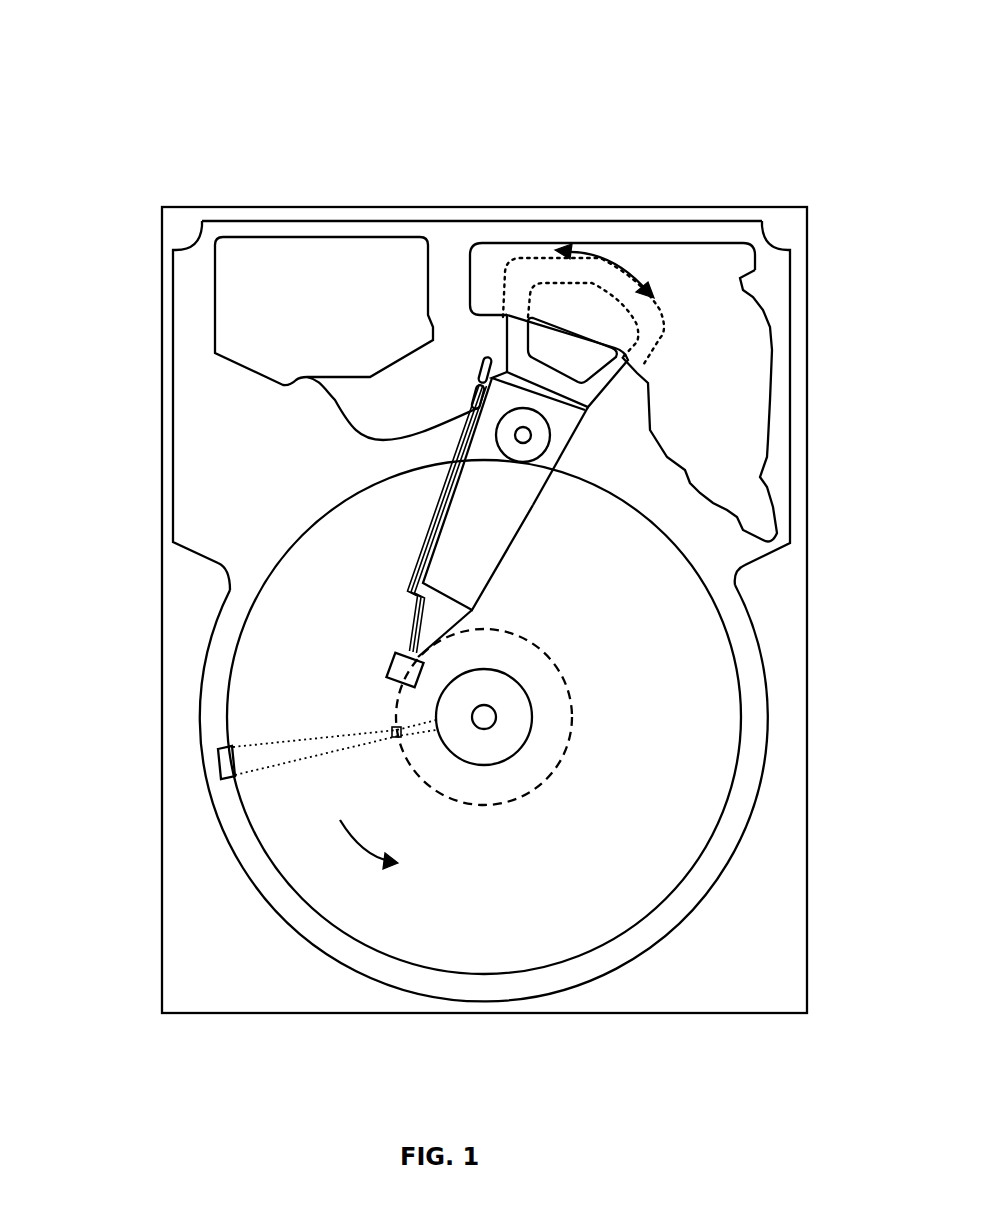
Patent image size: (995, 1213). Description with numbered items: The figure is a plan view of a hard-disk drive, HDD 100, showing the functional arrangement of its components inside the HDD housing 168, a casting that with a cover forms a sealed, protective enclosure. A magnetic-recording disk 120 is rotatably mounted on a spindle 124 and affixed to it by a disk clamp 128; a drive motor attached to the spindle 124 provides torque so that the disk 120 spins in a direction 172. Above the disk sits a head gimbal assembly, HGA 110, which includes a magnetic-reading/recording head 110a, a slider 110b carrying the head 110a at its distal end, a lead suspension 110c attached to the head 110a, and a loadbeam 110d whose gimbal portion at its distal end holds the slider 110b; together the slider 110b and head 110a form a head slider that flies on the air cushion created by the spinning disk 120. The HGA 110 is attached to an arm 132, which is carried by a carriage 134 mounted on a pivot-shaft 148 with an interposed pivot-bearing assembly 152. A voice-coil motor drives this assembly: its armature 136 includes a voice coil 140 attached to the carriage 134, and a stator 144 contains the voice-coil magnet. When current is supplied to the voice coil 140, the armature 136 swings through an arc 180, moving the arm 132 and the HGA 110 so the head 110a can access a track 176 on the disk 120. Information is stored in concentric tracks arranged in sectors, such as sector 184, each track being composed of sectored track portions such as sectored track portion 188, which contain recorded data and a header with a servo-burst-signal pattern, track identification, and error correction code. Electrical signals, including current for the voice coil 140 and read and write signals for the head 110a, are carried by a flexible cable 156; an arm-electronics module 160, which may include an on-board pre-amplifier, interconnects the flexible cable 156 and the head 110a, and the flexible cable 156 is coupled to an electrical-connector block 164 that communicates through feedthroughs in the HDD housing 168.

The hard-disk drive 100 is at (92, 90).
The head gimbal assembly 110 is at (253, 535).
The magnetic-reading/recording head 110a is at (398, 655).
The slider 110b is at (400, 628).
The lead suspension 110c is at (402, 605).
The loadbeam 110d is at (400, 582).
The magnetic-recording disk 120 is at (665, 655).
The spindle 124 is at (487, 717).
The disk clamp 128 is at (510, 733).
The arm 132 is at (475, 552).
The carriage 134 is at (543, 468).
The armature 136 is at (500, 348).
The voice coil 140 is at (518, 327).
The stator 144 is at (733, 337).
The pivot-shaft 148 is at (531, 435).
The pivot-bearing assembly 152 is at (537, 445).
The flexible cable 156 is at (342, 412).
The arm-electronics module 160 is at (477, 403).
The electrical-connector block 164 is at (240, 308).
The HDD housing 168 is at (790, 216).
The direction 172 is at (397, 838).
The track 176 is at (558, 680).
The arc 180 is at (603, 262).
The sector 184 is at (217, 760).
The sectored track portion 188 is at (392, 733).